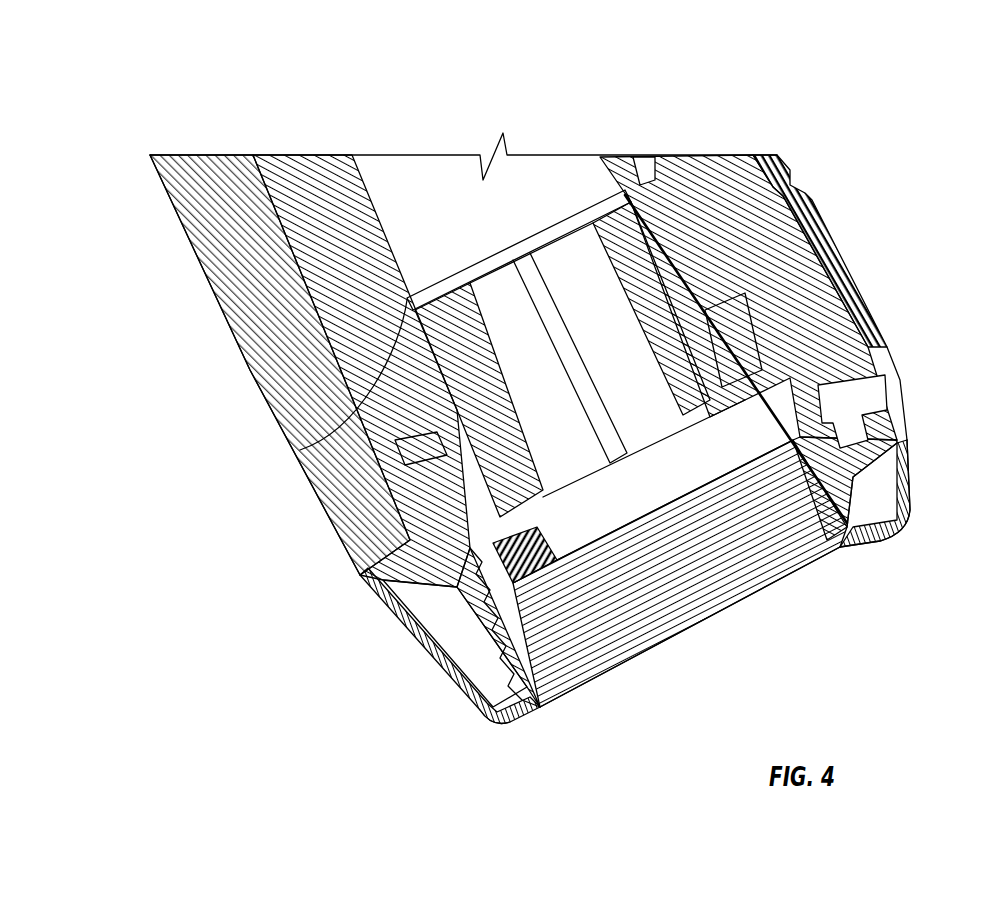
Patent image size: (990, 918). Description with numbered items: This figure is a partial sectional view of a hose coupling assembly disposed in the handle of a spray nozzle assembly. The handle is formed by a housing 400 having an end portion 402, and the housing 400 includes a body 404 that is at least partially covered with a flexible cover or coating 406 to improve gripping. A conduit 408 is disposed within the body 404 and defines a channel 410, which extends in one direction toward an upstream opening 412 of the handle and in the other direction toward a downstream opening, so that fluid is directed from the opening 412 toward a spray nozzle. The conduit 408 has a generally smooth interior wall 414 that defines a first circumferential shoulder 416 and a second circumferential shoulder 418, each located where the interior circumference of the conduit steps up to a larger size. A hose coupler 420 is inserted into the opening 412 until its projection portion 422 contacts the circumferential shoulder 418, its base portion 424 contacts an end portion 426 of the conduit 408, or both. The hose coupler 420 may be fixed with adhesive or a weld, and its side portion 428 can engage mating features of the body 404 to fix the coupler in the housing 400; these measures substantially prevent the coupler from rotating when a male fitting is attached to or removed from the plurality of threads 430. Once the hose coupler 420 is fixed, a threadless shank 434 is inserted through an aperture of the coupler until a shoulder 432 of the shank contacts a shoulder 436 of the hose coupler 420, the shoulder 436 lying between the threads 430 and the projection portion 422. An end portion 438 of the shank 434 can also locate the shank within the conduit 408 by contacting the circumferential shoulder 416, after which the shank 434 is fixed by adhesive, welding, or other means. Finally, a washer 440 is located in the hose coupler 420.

The housing 400 is at (155, 206).
The end portion 402 is at (313, 546).
The body 404 is at (243, 325).
The flexible cover or coating 406 is at (787, 165).
The conduit 408 is at (620, 165).
The channel 410 is at (458, 198).
The upstream opening 412 is at (695, 654).
The interior wall 414 is at (380, 203).
The first circumferential shoulder 416 is at (300, 450).
The second circumferential shoulder 418 is at (413, 437).
The hose coupler 420 is at (884, 539).
The projection portion 422 is at (445, 493).
The base portion 424 is at (510, 713).
The end portion 426 is at (513, 670).
The side portion 428 is at (907, 490).
The threads 430 is at (577, 674).
The shoulder 432 is at (770, 380).
The threadless shank 434 is at (657, 294).
The shoulder 436 is at (740, 343).
The end portion 438 is at (603, 207).
The washer 440 is at (723, 440).